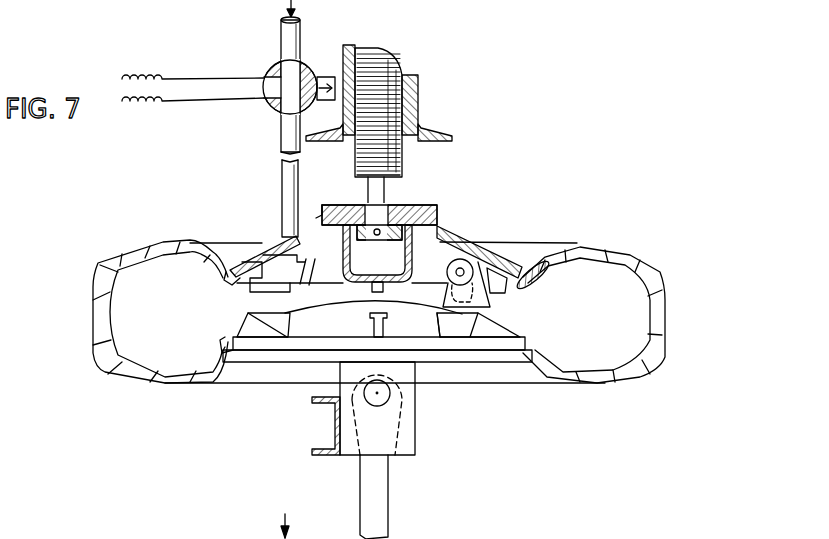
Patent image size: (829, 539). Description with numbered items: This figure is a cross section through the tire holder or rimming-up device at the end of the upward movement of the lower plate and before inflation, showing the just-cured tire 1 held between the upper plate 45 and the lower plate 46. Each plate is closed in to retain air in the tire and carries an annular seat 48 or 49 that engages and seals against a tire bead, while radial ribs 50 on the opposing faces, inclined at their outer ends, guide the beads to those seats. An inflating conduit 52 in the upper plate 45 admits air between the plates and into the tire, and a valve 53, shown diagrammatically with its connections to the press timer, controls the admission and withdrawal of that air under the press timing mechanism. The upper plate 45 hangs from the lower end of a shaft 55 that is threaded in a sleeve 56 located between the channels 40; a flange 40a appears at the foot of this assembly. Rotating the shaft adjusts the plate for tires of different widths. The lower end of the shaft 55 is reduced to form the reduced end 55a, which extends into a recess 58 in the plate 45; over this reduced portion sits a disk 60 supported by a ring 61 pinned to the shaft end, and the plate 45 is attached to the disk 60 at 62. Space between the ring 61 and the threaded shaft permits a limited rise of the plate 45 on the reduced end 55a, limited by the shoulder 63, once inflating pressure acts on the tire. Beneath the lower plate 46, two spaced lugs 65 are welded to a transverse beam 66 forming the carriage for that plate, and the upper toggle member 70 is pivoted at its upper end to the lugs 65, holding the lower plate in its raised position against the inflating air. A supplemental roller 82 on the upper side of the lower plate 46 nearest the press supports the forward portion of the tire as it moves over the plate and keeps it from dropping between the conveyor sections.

The tire 1 is at (632, 368).
The channels 40 is at (395, 80).
The cylinder flange 40a is at (418, 122).
The upper plate 45 is at (466, 248).
The lower plate 46 is at (462, 363).
The annular seat 48 is at (233, 268).
The annular seat 49 is at (224, 358).
The radial ribs 50 is at (296, 284).
The inflating conduit 52 is at (298, 178).
The valve 53 is at (186, 110).
The shaft 55 is at (425, 105).
The reduced end 55a is at (385, 195).
The sleeve 56 is at (408, 100).
The recess 58 is at (412, 265).
The disk 60 is at (428, 221).
The ring 61 is at (418, 212).
The attachment point 62 is at (328, 205).
The shoulder 63 is at (403, 180).
The lugs 65 is at (410, 440).
The transverse beam 66 is at (335, 430).
The upper toggle member 70 is at (382, 491).
The supplemental roller 82 is at (486, 258).